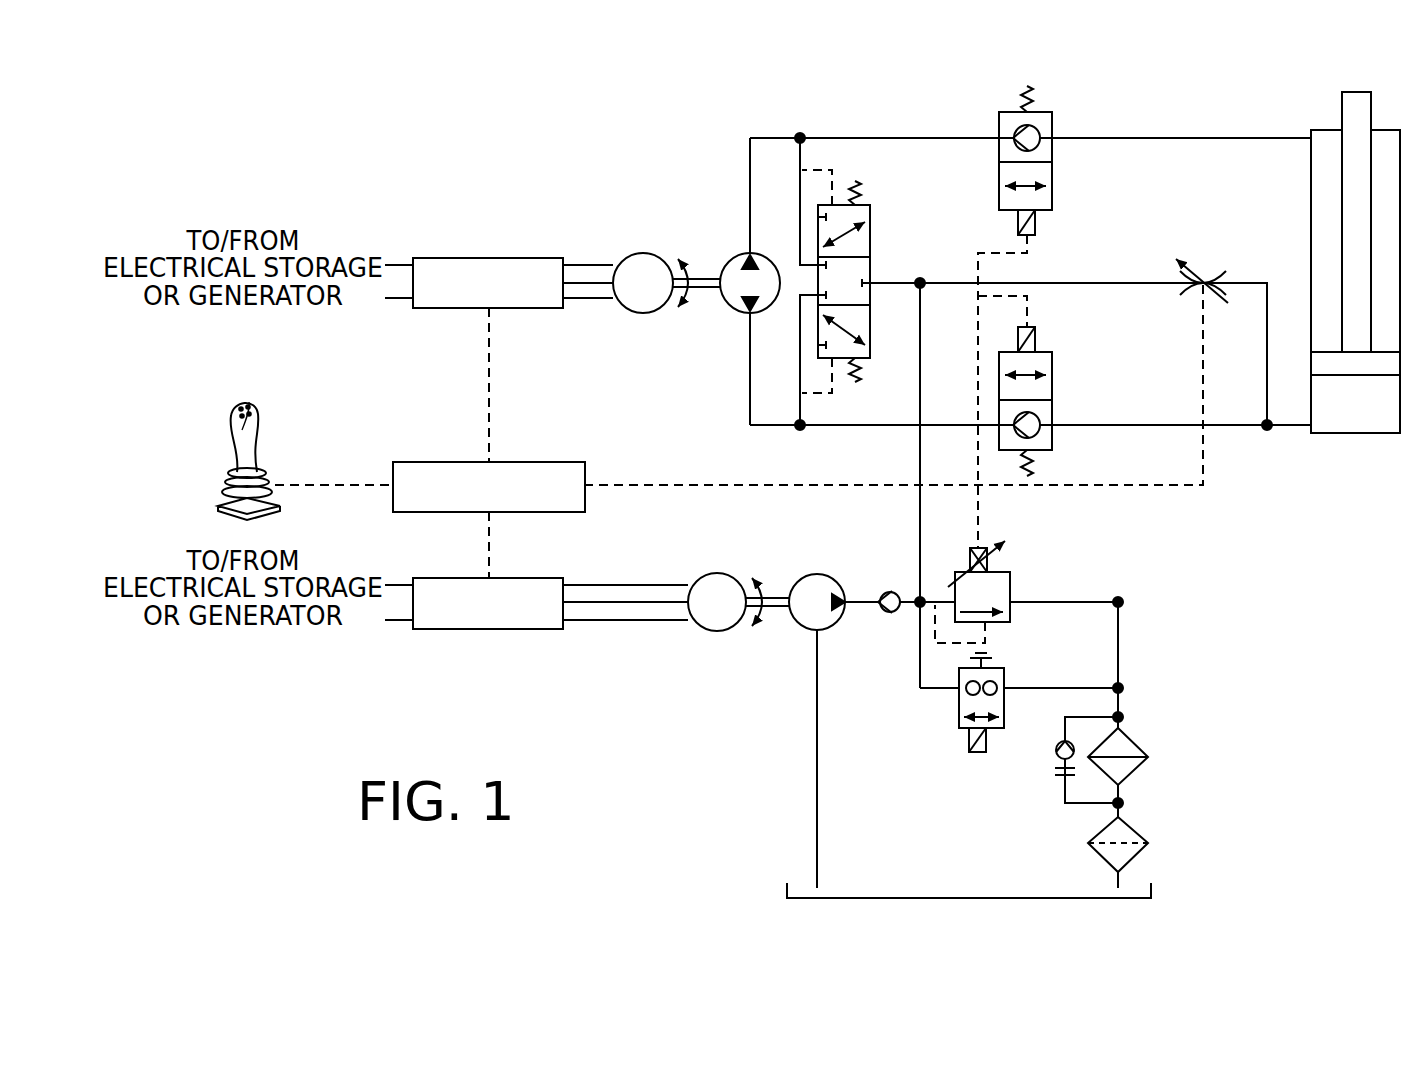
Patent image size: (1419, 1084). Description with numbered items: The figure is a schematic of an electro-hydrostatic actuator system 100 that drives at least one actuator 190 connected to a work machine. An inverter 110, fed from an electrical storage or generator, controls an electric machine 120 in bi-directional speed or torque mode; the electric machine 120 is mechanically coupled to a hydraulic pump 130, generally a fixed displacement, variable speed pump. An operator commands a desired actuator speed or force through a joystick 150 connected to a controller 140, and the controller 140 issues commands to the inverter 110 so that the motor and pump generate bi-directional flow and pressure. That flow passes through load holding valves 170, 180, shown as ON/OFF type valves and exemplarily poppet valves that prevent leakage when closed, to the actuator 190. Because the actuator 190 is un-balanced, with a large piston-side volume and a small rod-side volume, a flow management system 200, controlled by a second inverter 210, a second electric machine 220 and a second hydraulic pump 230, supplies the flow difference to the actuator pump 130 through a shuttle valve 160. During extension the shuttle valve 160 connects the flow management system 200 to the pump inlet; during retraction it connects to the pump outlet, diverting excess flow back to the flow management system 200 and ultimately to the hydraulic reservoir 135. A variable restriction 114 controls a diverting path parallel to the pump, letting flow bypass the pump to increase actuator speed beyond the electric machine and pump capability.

The electro-hydrostatic actuator system 100 is at (200, 157).
The inverter 110 is at (470, 258).
The electric machine 120 is at (638, 255).
The hydraulic pump 130 is at (740, 257).
The controller 140 is at (440, 462).
The joystick 150 is at (253, 403).
The shuttle valve 160 is at (870, 213).
The load holding valve 170 is at (999, 125).
The load holding valve 180 is at (1052, 372).
The variable restriction 114 is at (1213, 272).
The actuator 190 is at (1311, 130).
The flow management system 200 is at (1097, 637).
The second inverter 210 is at (455, 630).
The second electric machine 220 is at (712, 631).
The second hydraulic pump 230 is at (817, 574).
The hydraulic reservoir 135 is at (850, 898).